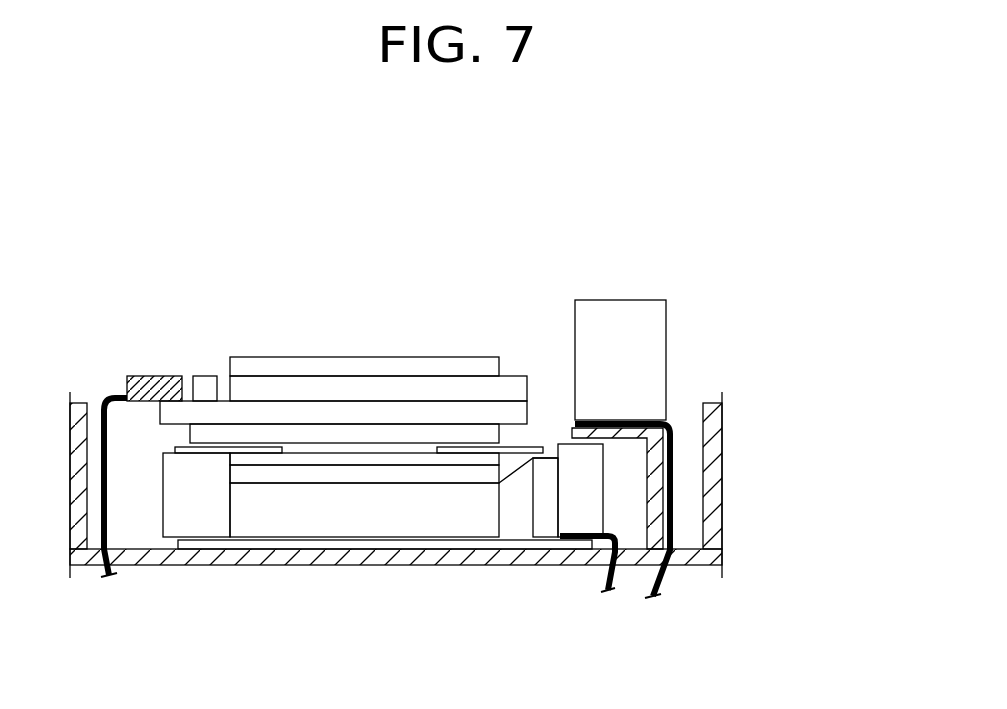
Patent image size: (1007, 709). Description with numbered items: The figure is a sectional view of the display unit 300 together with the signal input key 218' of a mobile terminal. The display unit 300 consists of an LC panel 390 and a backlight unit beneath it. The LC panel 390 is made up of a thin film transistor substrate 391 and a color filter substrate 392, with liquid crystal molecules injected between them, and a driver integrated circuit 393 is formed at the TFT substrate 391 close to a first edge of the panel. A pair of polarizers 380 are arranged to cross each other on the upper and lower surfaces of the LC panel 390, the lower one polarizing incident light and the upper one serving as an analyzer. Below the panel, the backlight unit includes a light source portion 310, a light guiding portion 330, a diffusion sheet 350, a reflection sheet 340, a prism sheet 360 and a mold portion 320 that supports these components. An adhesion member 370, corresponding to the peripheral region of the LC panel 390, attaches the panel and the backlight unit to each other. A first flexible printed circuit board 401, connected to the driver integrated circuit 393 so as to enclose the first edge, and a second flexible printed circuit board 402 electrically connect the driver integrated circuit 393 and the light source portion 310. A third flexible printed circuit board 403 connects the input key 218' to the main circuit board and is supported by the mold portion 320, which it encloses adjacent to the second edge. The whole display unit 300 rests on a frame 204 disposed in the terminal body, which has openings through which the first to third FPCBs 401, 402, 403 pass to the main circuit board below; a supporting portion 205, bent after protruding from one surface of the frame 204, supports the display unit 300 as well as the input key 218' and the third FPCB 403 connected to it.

The display unit 300 is at (153, 338).
The driver integrated circuit 393 is at (207, 387).
The polarizers 380 is at (253, 435).
The LC panel 390 is at (352, 296).
The color filter substrate 392 is at (375, 392).
The thin film transistor substrate 391 is at (412, 417).
The adhesion member 370 is at (173, 453).
The mold portion 320 is at (198, 515).
The prism sheet 360 is at (308, 460).
The diffusion sheet 350 is at (350, 472).
The reflection sheet 340 is at (392, 543).
The light guiding portion 330 is at (433, 510).
The light source portion 310 is at (543, 522).
The frame 204 is at (265, 557).
The supporting portion 205 is at (643, 472).
The input key 218' is at (674, 360).
The first flexible printed circuit board 401 is at (108, 574).
The second flexible printed circuit board 402 is at (612, 584).
The third flexible printed circuit board 403 is at (667, 583).